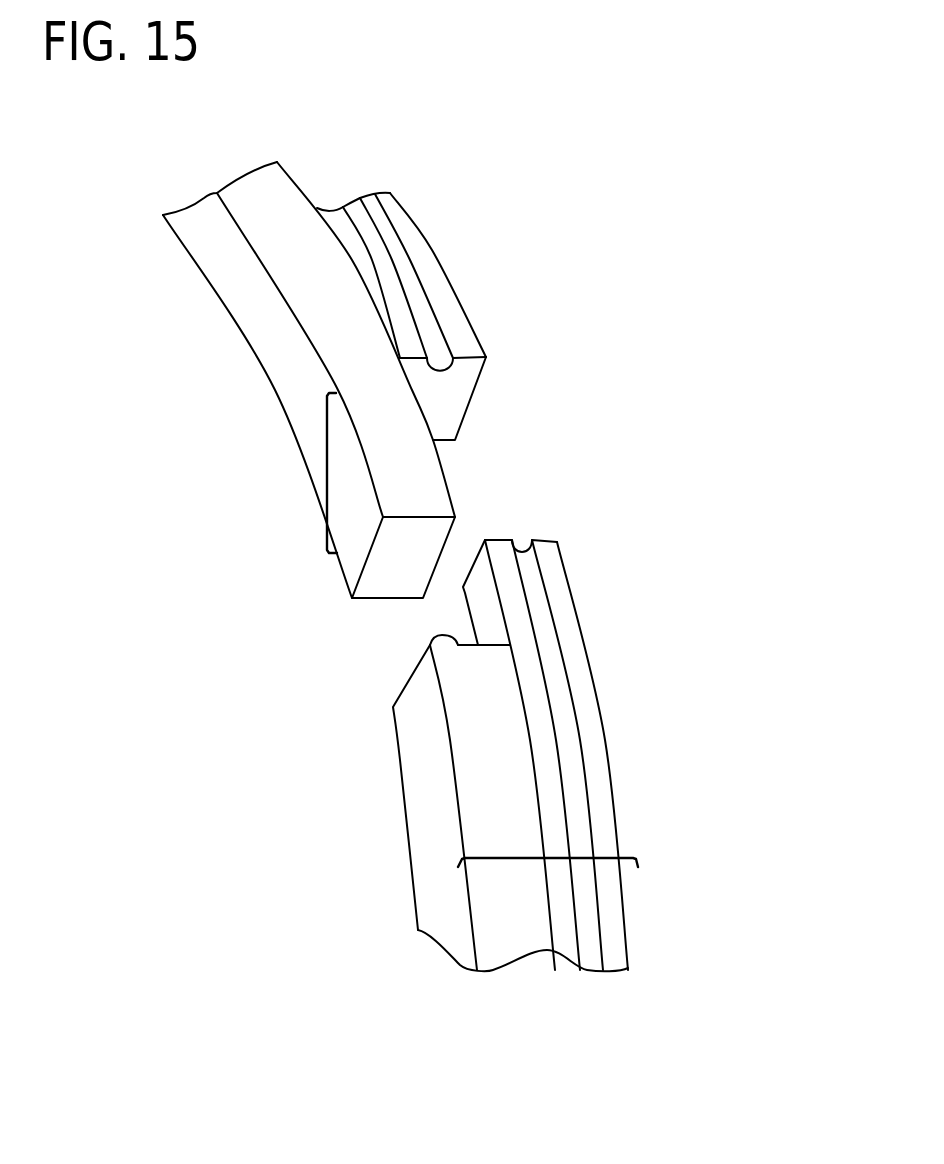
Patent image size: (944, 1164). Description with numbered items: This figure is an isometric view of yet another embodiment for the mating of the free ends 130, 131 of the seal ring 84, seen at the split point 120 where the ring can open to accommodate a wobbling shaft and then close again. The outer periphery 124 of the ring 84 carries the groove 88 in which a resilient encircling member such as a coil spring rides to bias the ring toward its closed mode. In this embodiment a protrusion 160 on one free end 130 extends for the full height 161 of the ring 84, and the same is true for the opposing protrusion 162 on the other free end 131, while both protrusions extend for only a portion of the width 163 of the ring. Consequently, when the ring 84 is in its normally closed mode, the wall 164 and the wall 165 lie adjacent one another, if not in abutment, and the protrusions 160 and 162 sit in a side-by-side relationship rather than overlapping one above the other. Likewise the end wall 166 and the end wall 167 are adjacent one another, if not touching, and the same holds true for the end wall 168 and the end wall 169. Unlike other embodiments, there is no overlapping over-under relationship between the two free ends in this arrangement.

The ring 84 is at (678, 308).
The groove 88 is at (390, 262).
The split point 120 is at (493, 480).
The outer periphery 124 is at (315, 293).
The free end 130 is at (247, 498).
The free end 131 is at (360, 890).
The protrusion 160 is at (337, 558).
The height 161 is at (323, 480).
The protrusion 162 is at (570, 577).
The width 163 is at (547, 857).
The wall 164 is at (487, 600).
The wall 165 is at (440, 450).
The end wall 166 is at (465, 375).
The end wall 167 is at (543, 538).
The end wall 168 is at (382, 573).
The end wall 169 is at (437, 635).